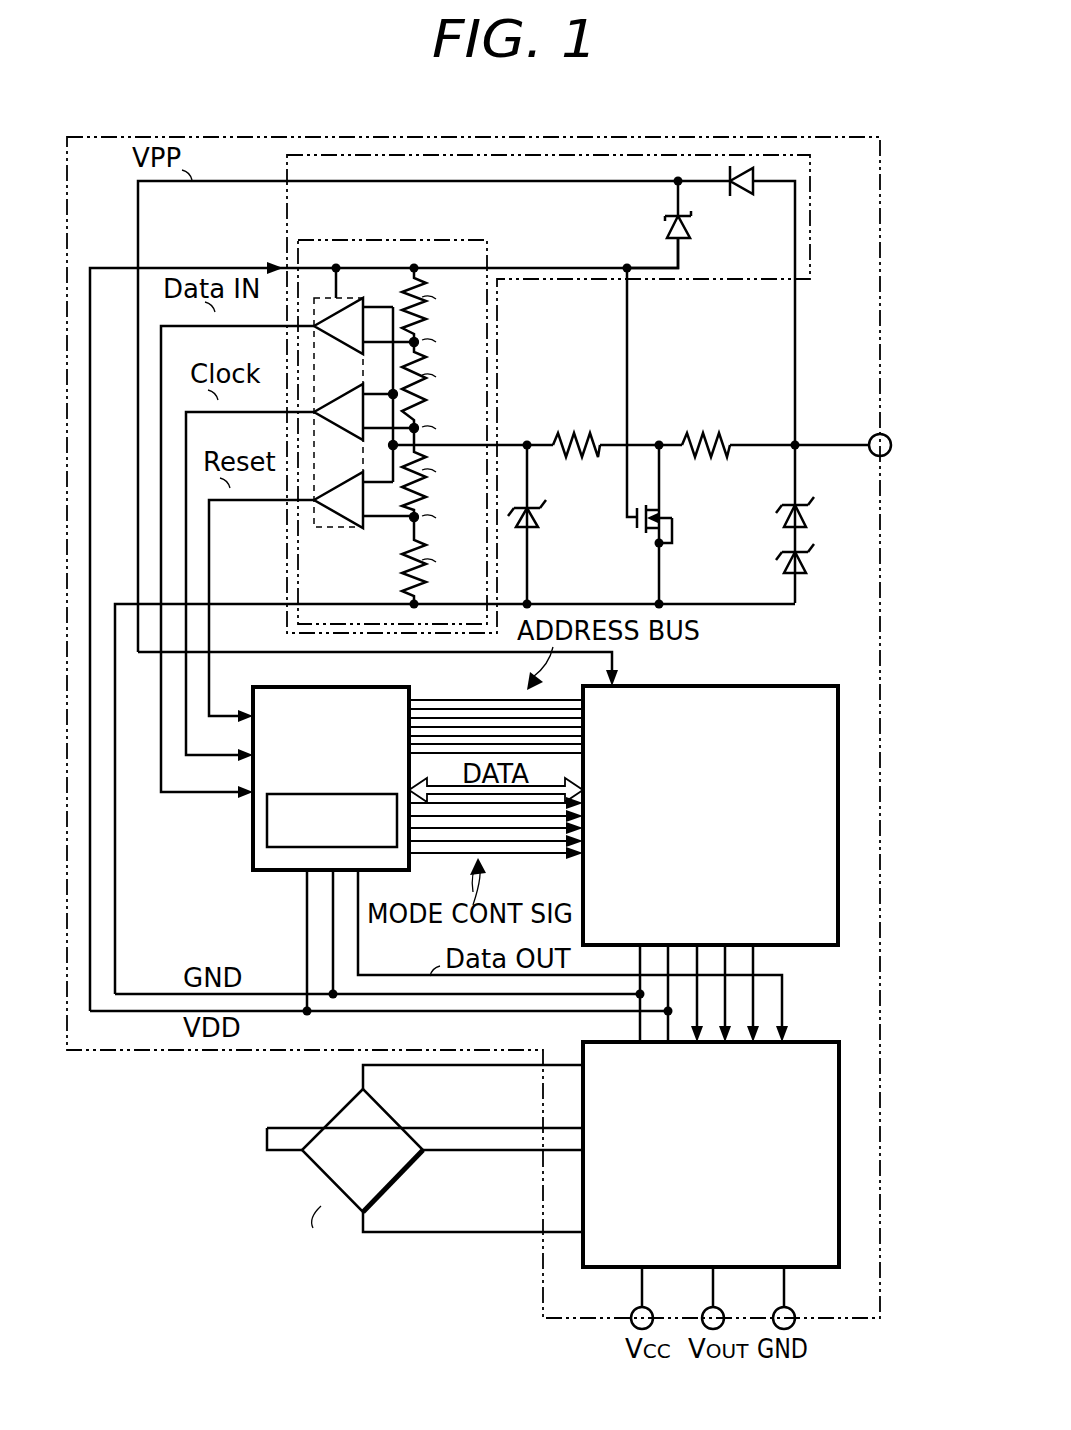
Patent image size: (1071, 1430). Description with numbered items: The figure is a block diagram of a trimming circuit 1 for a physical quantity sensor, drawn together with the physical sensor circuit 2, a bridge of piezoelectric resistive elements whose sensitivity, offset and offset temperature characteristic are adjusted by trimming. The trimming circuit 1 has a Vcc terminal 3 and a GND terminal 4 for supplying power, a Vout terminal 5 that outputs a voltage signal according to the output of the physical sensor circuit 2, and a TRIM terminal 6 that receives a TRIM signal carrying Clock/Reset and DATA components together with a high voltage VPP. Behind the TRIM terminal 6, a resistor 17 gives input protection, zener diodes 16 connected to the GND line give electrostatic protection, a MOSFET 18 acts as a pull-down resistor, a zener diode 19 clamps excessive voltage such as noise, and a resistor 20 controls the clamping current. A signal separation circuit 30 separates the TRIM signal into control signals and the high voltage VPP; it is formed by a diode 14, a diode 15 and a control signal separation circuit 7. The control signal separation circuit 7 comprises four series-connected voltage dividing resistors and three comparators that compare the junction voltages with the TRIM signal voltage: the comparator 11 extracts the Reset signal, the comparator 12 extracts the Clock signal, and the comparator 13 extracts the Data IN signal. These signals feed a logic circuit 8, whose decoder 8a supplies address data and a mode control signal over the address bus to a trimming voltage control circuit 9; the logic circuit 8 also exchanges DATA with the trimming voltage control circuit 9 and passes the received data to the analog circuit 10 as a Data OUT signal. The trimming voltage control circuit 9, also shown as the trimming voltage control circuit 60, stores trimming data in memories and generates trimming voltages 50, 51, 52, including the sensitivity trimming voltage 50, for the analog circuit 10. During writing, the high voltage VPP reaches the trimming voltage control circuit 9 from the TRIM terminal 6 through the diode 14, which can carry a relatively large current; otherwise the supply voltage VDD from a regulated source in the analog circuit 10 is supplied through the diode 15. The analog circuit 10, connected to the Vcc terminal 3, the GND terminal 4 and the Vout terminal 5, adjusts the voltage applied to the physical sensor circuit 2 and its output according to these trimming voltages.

The trimming circuit 1 is at (779, 128).
The physical sensor circuit 2 is at (325, 1193).
The Vcc terminal 3 is at (632, 1310).
The GND terminal 4 is at (773, 1310).
The Vout terminal 5 is at (703, 1310).
The TRIM terminal 6 is at (888, 435).
The control signal separation circuit 7 is at (435, 239).
The logic circuit 8 is at (331, 764).
The decoder 8a is at (343, 794).
The trimming voltage control circuit 9 is at (783, 684).
The analog circuit 10 is at (810, 1267).
The comparator 11 is at (340, 526).
The comparator 12 is at (340, 438).
The comparator 13 is at (340, 352).
The diode 14 is at (744, 196).
The diode 15 is at (665, 227).
The zener diodes 16 is at (826, 488).
The resistor 17 is at (711, 430).
The MOSFET 18 is at (648, 533).
The zener diode 19 is at (540, 512).
The resistor 20 is at (581, 430).
The signal separation circuit 30 is at (706, 281).
The sensitivity trimming voltage 50 is at (697, 968).
The trimming signal 51 is at (725, 988).
The trimming signal 52 is at (753, 1007).
The trimming voltage control circuit 60 is at (726, 799).